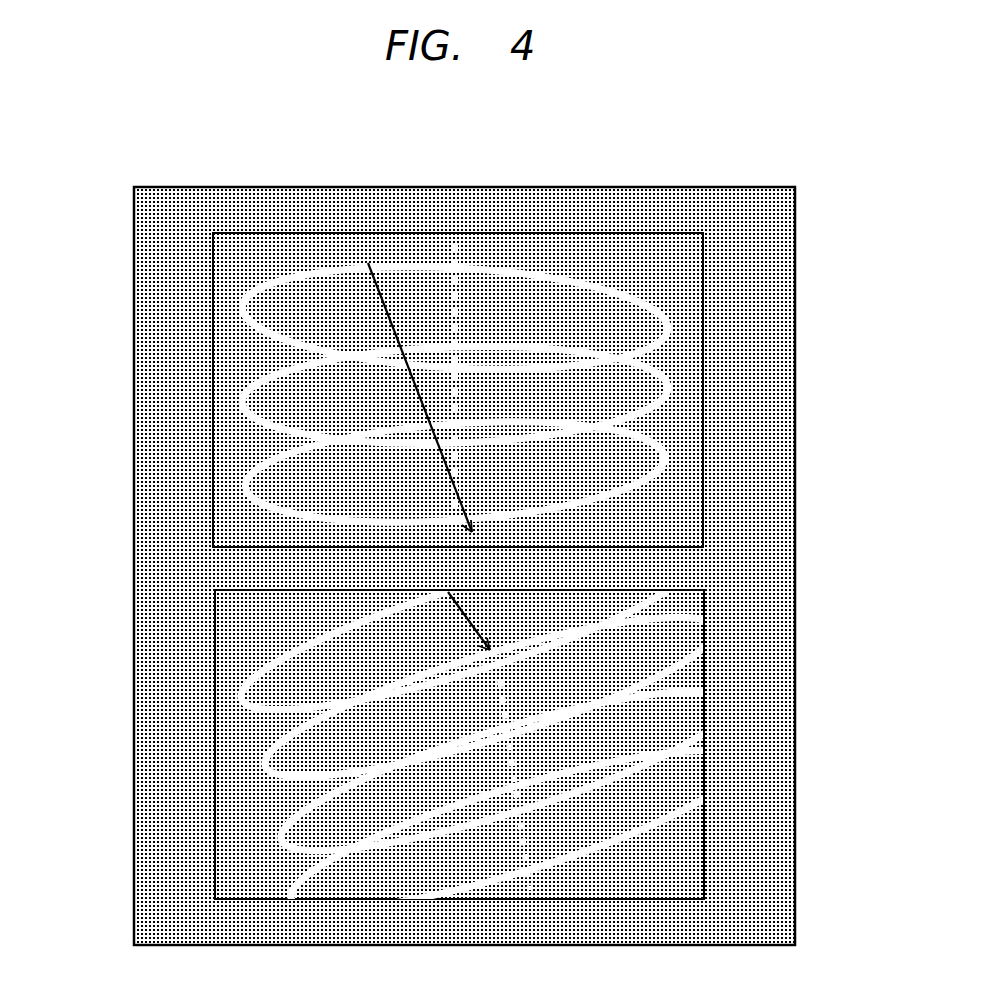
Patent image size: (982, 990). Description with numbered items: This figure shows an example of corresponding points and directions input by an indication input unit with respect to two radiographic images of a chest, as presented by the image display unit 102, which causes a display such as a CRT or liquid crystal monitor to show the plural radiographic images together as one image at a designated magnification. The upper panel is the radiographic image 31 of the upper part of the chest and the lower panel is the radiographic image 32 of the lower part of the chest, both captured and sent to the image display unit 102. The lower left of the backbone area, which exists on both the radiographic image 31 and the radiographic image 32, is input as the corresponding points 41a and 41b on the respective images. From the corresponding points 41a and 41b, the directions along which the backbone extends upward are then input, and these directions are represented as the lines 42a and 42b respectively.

The image display unit 102 is at (453, 186).
The radiographic image of the upper part of the chest 31 is at (703, 380).
The radiographic image of the lower part of the chest 32 is at (704, 785).
The corresponding point 41a is at (473, 532).
The corresponding point 41b is at (488, 652).
The line 42a is at (425, 410).
The line 42b is at (490, 650).